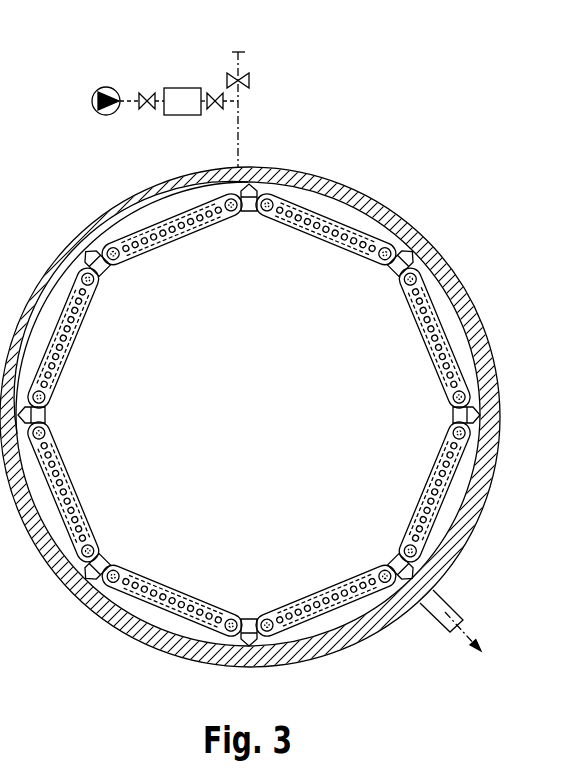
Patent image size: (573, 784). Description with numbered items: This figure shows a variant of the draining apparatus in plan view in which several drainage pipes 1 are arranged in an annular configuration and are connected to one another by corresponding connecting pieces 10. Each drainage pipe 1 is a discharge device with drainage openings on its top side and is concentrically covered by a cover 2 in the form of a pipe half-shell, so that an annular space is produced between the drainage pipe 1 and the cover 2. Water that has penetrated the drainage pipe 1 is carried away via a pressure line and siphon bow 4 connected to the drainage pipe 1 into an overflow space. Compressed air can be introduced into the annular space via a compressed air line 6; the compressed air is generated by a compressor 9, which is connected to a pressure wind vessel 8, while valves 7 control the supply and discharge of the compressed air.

The drainage pipe 1 is at (190, 238).
The cover 2 is at (150, 252).
The pressure line and siphon bow 4 is at (455, 603).
The compressed air line 6 is at (240, 133).
The valves 7 is at (248, 83).
The pressure wind vessel 8 is at (187, 88).
The compressor 9 is at (113, 89).
The connecting pieces 10 is at (102, 272).